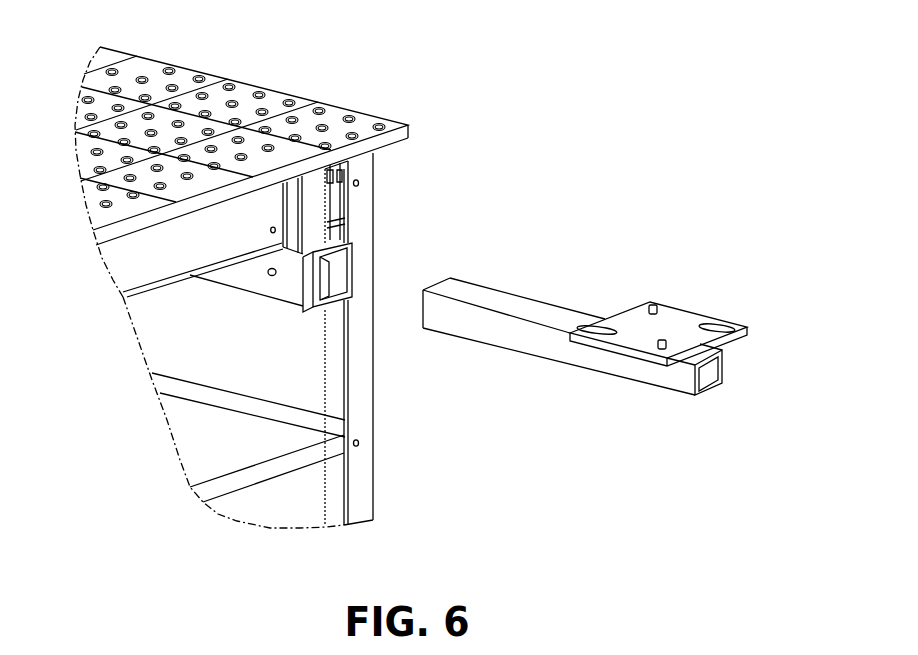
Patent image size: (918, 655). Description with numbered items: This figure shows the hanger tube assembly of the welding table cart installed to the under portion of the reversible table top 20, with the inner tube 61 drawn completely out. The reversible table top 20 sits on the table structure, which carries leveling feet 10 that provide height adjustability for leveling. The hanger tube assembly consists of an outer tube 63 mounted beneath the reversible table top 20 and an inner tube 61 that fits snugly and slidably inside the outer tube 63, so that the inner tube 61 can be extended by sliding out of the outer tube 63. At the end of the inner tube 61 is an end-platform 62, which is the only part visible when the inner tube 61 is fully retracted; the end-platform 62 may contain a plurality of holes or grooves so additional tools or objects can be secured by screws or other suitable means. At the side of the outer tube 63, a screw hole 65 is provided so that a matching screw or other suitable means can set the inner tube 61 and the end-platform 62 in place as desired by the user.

The leveling feet 10 is at (367, 457).
The reversible table top 20 is at (413, 129).
The inner tube 61 is at (527, 307).
The end-platform 62 is at (687, 322).
The outer tube 63 is at (350, 293).
The screw hole 65 is at (270, 274).